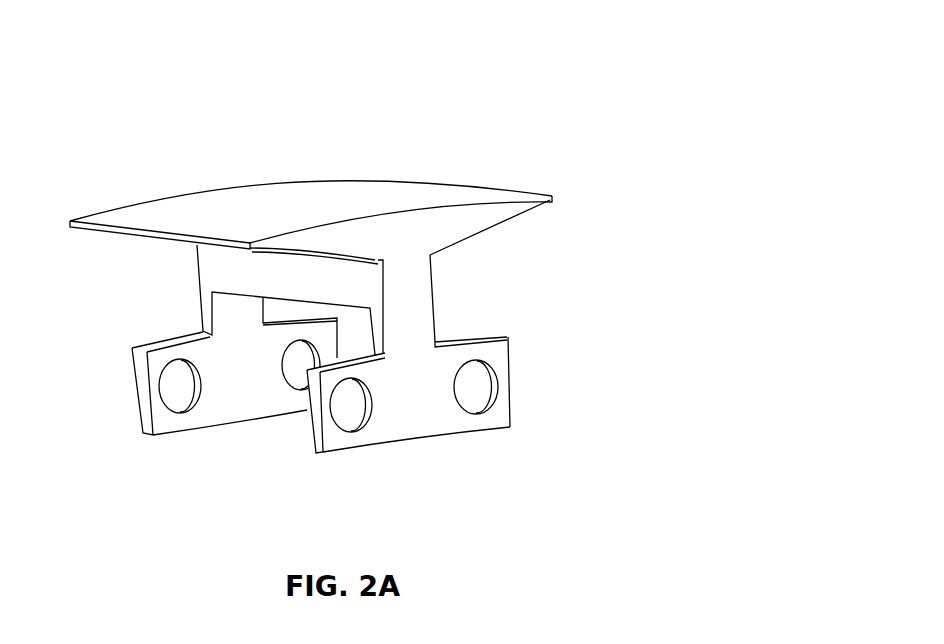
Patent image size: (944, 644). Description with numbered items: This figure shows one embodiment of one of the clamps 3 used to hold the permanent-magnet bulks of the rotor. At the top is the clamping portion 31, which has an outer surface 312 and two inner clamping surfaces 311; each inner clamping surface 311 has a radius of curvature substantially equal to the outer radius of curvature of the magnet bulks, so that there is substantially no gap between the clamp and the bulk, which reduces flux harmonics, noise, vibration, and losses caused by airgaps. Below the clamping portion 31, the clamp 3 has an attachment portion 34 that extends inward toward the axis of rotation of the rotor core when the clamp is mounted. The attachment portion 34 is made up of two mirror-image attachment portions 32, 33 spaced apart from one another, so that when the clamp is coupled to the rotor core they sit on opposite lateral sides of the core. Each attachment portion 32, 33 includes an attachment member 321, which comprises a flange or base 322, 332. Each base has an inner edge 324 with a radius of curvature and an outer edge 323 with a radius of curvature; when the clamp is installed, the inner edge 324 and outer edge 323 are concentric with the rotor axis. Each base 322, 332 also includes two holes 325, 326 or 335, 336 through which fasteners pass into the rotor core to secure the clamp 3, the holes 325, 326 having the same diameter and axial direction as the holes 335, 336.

The clamp 3 is at (345, 265).
The clamping portion 31 is at (351, 165).
The inner clamping surface 311 is at (510, 215).
The outer surface 312 is at (329, 198).
The attachment portion 32 is at (456, 385).
The attachment member 321 is at (415, 287).
The flange or base 322 is at (420, 413).
The outer edge 323 is at (478, 340).
The inner edge 324 is at (485, 430).
The hole 325 is at (477, 390).
The hole 326 is at (345, 410).
The attachment portion 33 is at (220, 373).
The flange or base 332 is at (233, 398).
The hole 335 is at (298, 362).
The hole 336 is at (178, 388).
The attachment portion 34 is at (265, 278).